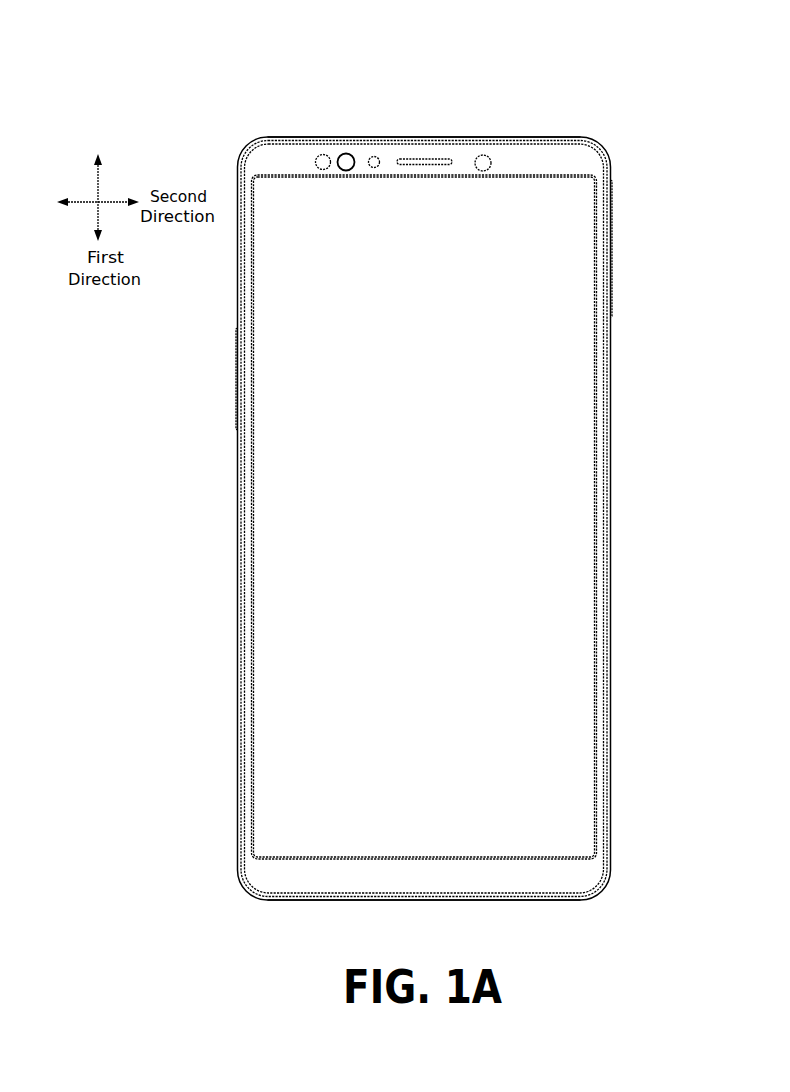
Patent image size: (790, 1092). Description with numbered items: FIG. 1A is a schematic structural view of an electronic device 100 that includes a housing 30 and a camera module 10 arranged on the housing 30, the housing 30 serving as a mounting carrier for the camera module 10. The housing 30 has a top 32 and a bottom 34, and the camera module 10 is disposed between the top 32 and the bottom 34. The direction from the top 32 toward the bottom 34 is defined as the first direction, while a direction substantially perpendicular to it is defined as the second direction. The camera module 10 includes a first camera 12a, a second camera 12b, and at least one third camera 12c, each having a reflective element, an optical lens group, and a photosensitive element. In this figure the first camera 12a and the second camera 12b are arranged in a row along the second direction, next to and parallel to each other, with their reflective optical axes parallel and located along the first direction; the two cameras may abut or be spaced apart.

The electronic device 100 is at (276, 54).
The camera module 10 is at (368, 93).
The first camera 12a is at (320, 155).
The second camera 12b is at (345, 155).
The third camera 12c is at (483, 157).
The housing 30 is at (612, 505).
The top 32 is at (567, 138).
The bottom 34 is at (428, 902).